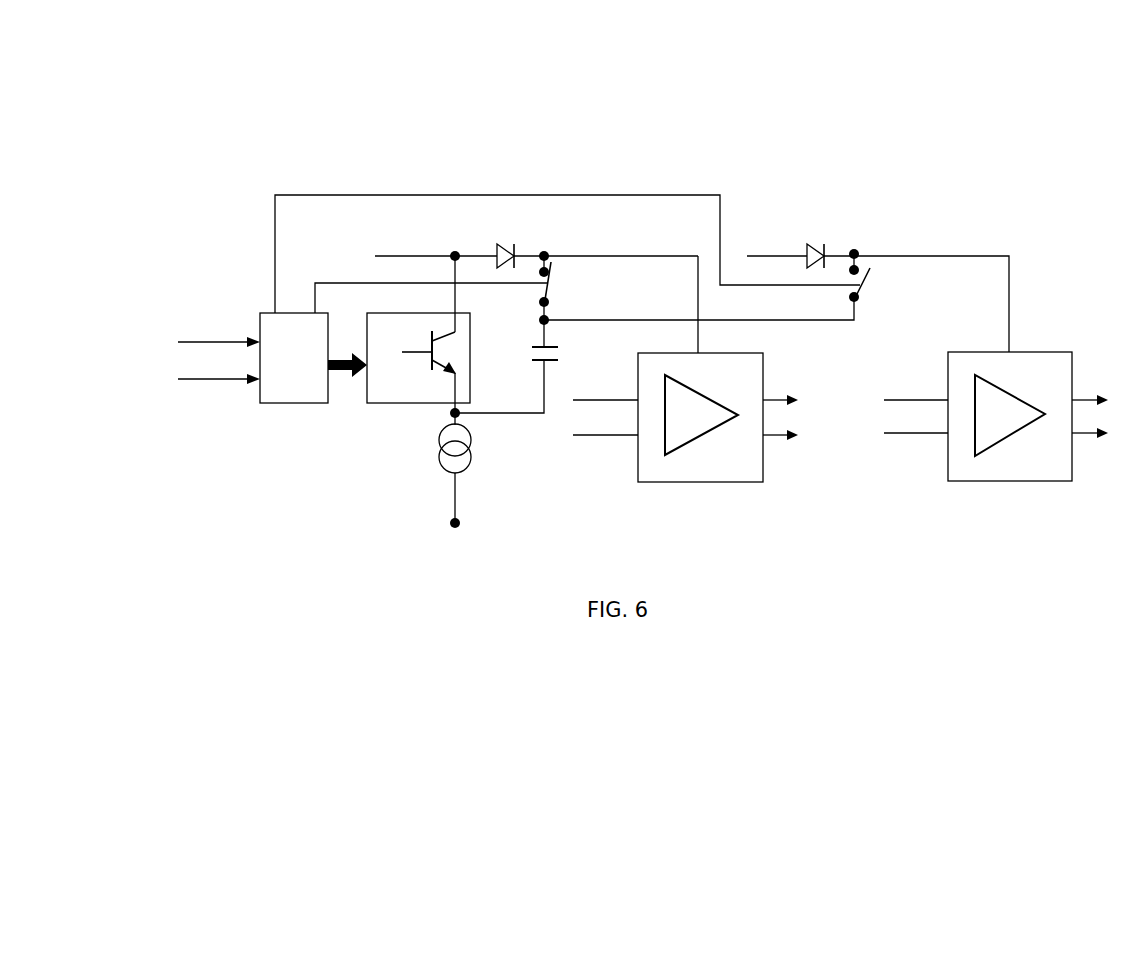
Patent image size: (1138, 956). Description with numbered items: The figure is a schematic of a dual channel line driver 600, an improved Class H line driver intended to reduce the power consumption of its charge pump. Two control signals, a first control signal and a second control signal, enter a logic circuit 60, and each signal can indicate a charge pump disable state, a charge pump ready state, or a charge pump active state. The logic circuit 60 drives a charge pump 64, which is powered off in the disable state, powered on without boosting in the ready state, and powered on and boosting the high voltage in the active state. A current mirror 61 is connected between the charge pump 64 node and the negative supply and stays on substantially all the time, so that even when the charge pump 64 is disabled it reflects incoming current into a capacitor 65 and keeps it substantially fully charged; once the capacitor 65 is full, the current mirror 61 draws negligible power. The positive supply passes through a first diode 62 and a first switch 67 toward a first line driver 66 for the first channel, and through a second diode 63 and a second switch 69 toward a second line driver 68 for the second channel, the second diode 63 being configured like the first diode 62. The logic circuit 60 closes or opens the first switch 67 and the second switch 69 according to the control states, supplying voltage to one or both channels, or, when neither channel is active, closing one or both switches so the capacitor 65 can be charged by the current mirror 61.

The dual channel line driver 600 is at (324, 74).
The logic circuit 60 is at (280, 403).
The current mirror 61 is at (450, 475).
The first diode 62 is at (499, 244).
The second diode 63 is at (812, 243).
The charge pump 64 is at (395, 403).
The capacitor 65 is at (540, 368).
The first line driver 66 is at (708, 483).
The first switch 67 is at (550, 270).
The second line driver 68 is at (1033, 482).
The second switch 69 is at (868, 272).